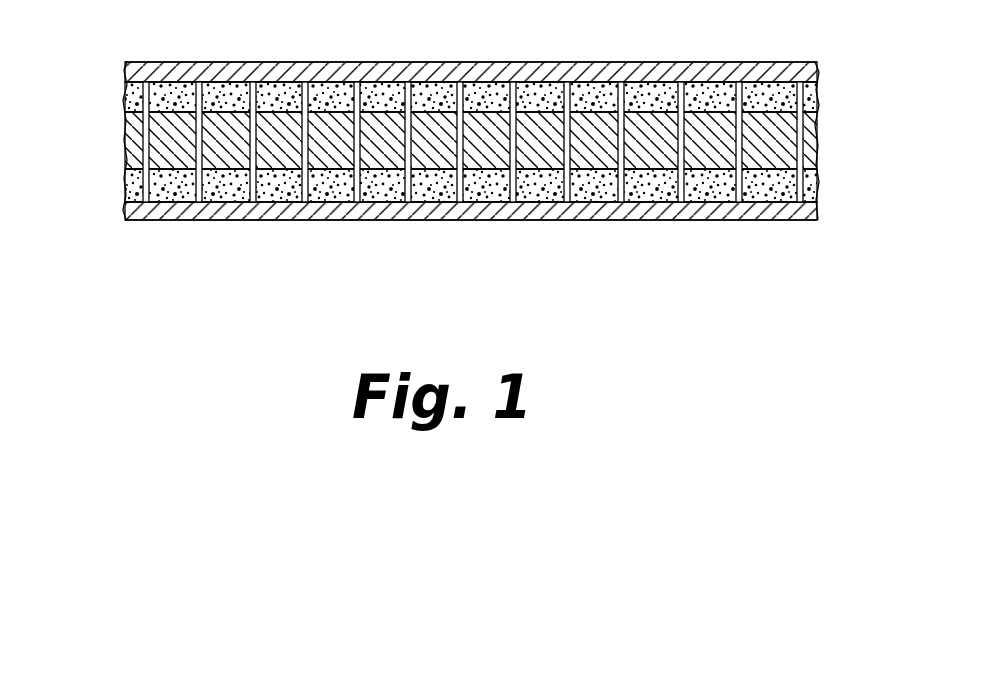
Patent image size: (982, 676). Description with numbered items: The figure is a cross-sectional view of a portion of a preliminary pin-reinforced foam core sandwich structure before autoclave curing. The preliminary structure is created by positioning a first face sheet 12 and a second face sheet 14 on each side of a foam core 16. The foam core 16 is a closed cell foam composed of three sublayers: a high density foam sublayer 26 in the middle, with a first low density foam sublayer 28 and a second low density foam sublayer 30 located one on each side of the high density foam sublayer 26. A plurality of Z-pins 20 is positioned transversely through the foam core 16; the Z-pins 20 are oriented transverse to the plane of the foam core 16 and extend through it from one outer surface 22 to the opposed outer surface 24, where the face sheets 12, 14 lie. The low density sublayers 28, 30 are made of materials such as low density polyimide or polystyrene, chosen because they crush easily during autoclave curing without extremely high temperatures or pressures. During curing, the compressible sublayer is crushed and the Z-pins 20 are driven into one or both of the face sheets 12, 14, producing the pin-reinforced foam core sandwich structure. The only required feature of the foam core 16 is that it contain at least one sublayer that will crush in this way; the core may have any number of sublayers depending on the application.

The first face sheet 12 is at (783, 72).
The second face sheet 14 is at (755, 213).
The foam core 16 is at (473, 151).
The Z-pins 20 is at (146, 100).
The outer surface 22 is at (344, 80).
The opposed outer surface 24 is at (373, 204).
The high density foam sublayer 26 is at (170, 131).
The first low density foam sublayer 28 is at (170, 100).
The second low density foam sublayer 30 is at (158, 180).